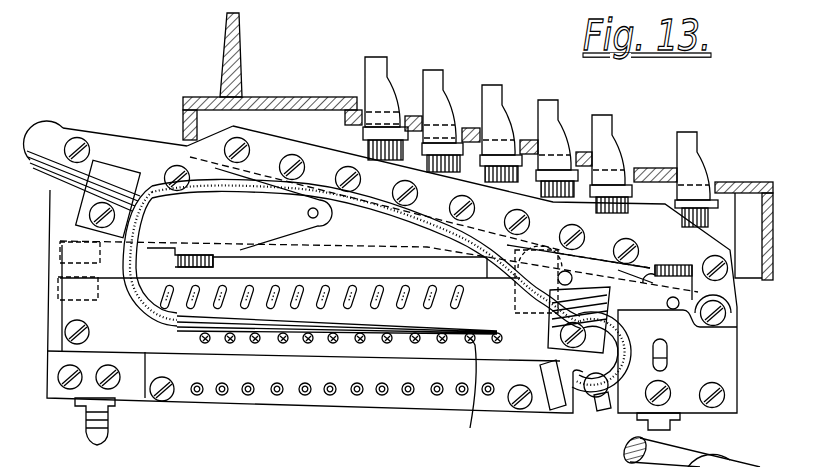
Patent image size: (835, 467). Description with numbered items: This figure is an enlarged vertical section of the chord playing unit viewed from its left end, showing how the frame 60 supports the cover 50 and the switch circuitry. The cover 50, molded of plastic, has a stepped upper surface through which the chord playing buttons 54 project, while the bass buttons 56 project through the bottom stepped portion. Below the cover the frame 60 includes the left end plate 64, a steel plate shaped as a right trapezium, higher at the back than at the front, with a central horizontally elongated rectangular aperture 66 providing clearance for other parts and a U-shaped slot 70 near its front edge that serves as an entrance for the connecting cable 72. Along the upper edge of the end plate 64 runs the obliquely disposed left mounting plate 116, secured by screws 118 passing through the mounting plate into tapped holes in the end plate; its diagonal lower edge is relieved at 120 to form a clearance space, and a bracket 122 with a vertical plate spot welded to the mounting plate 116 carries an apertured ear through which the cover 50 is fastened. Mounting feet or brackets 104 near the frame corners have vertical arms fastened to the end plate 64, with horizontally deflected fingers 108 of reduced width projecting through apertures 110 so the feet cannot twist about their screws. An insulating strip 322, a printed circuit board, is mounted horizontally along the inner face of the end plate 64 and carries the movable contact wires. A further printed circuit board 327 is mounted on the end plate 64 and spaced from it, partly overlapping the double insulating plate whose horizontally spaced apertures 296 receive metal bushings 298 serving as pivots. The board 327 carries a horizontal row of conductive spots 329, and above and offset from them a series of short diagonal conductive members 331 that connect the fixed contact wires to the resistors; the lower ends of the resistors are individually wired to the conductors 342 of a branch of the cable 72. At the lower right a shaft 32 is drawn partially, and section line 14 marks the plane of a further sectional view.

The section line 14— 14 is at (105, 101).
The cover 50 is at (244, 76).
The chord playing buttons 54 is at (435, 82).
The bass buttons 56 is at (688, 145).
The left mounting plate 116 is at (272, 147).
The screws 118 is at (172, 175).
The insulating strip 322 is at (109, 194).
The rectangular apertures 66 is at (240, 258).
The relieved lower edge 120 is at (428, 250).
The cable branch conductors 342 is at (130, 312).
The diagonal conductive members 331 is at (363, 287).
The conductive spots 329 is at (200, 338).
The apertures 296 is at (328, 386).
The metal bushings 298 is at (303, 396).
The insulating strip or printed circuit board 327 is at (474, 394).
The U-shaped recess or slot 70 is at (587, 420).
The left end plate 64 is at (722, 350).
The fingers 108 is at (668, 358).
The apertures 110 is at (665, 368).
The brackets 122 is at (632, 283).
The connecting cable 72 is at (656, 301).
The mounting feet or brackets 104 is at (90, 411).
The frame 60 is at (751, 392).
The shaft 32 is at (625, 458).